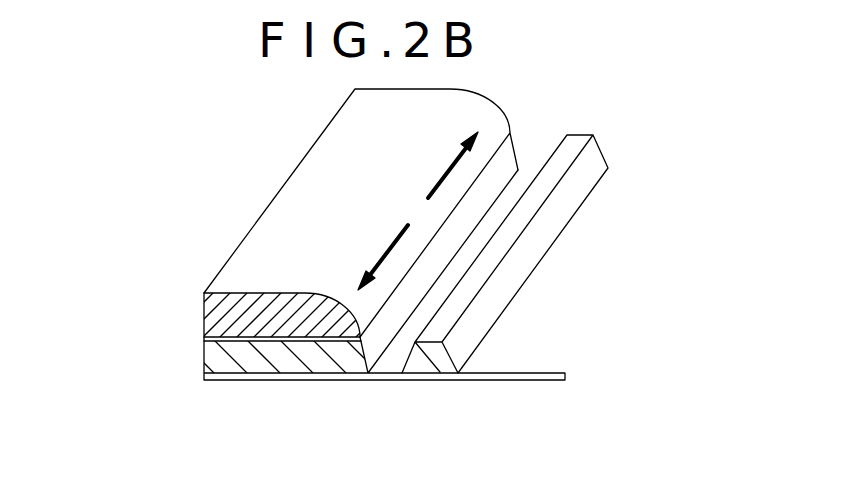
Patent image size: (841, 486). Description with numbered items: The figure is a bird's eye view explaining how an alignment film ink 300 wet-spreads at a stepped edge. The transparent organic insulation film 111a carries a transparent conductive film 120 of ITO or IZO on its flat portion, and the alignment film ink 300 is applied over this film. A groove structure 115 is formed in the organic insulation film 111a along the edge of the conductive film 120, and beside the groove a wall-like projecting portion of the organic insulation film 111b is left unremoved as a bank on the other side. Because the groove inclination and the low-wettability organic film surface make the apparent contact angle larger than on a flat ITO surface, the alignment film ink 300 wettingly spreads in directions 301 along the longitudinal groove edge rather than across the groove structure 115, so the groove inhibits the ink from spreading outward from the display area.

The directions 301 is at (383, 252).
The alignment film ink 300 is at (212, 314).
The transparent conductive film 120 is at (210, 339).
The transparent organic insulation film 111a is at (210, 363).
The wall-like portions of the transparent organic insulation film 111b is at (517, 265).
The groove structure 115 is at (468, 403).